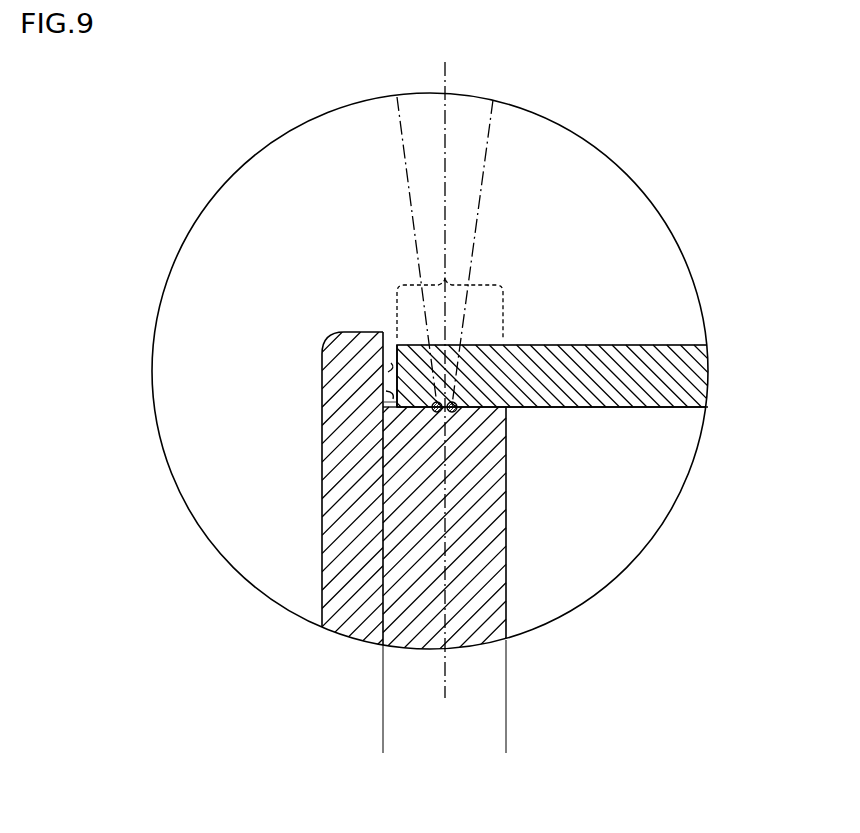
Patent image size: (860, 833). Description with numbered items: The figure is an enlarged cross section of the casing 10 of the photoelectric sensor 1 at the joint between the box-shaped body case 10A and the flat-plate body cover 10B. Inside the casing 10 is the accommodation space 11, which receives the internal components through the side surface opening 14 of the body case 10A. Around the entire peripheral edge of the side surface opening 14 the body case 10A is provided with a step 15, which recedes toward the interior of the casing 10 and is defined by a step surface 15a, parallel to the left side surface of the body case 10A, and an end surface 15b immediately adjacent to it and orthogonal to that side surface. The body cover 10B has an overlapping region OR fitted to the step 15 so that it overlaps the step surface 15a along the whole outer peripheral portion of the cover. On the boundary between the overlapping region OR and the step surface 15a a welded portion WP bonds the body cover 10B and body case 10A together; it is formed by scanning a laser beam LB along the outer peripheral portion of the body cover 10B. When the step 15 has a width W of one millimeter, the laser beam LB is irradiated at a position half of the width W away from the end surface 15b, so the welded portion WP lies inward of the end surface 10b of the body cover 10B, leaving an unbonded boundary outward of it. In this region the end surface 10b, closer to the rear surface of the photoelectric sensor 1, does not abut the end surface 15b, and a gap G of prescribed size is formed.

The photoelectric sensor 1 is at (728, 50).
The casing 10 is at (662, 337).
The body case 10A is at (350, 570).
The body cover 10B is at (610, 375).
The end surface 10b is at (397, 357).
The accommodation space 11 is at (595, 503).
The side surface opening 14 is at (507, 410).
The step 15 is at (80, 373).
The step surface 15a is at (386, 391).
The end surface 15b is at (388, 372).
The gap G is at (388, 400).
The overlapping region OR is at (445, 369).
The laser beam LB is at (400, 147).
The welded portion WP is at (457, 412).
The width W is at (383, 687).